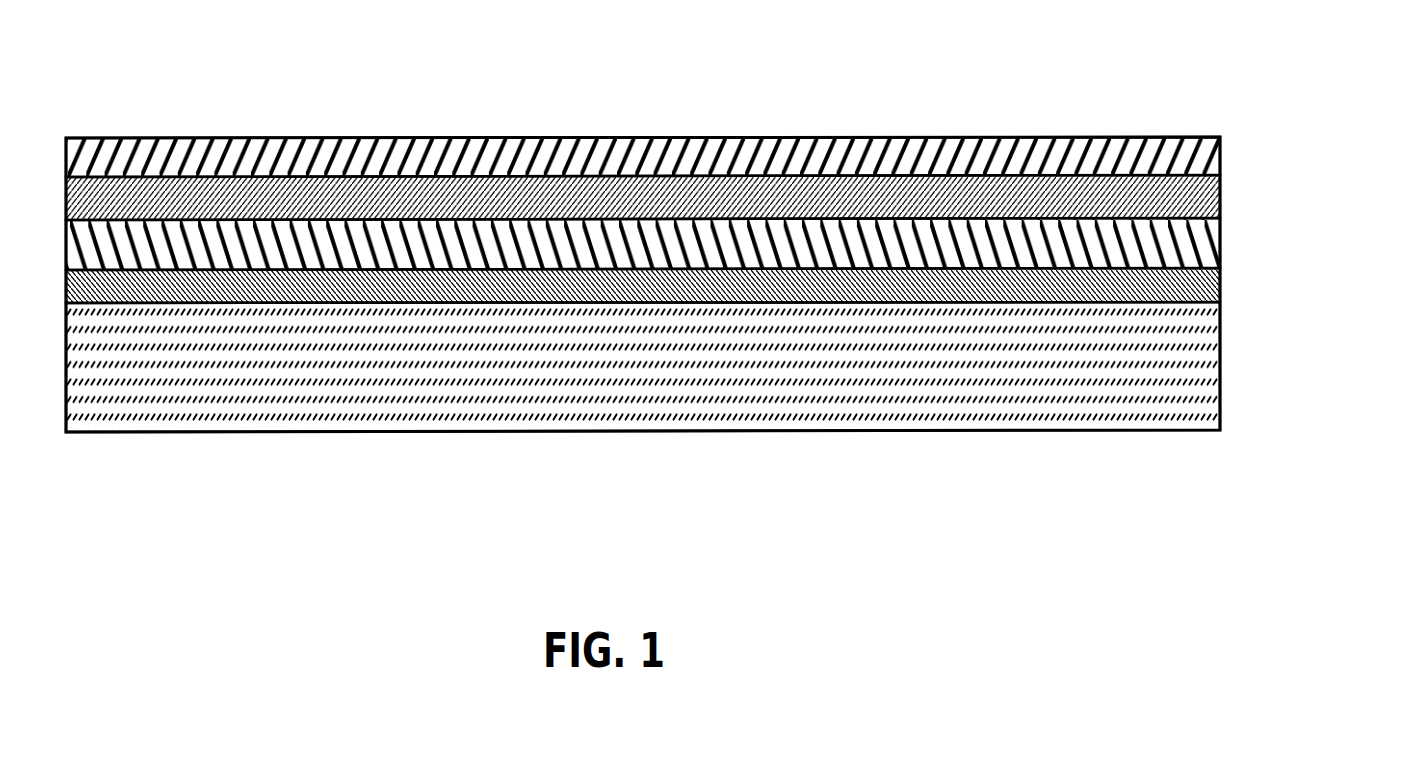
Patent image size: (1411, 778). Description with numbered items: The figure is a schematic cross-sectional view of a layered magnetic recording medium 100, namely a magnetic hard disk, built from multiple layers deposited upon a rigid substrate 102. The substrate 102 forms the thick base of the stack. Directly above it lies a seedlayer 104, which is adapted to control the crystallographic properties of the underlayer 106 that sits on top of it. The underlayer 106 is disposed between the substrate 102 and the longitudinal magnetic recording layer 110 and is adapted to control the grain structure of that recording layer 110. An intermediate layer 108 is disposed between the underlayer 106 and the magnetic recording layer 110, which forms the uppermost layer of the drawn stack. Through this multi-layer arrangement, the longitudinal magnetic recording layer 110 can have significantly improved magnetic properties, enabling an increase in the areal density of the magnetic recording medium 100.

The layered magnetic recording medium 100 is at (655, 100).
The rigid substrate 102 is at (662, 431).
The seedlayer 104 is at (1220, 285).
The underlayer 106 is at (1220, 238).
The intermediate layer 108 is at (1220, 195).
The longitudinal magnetic recording layer 110 is at (1220, 156).